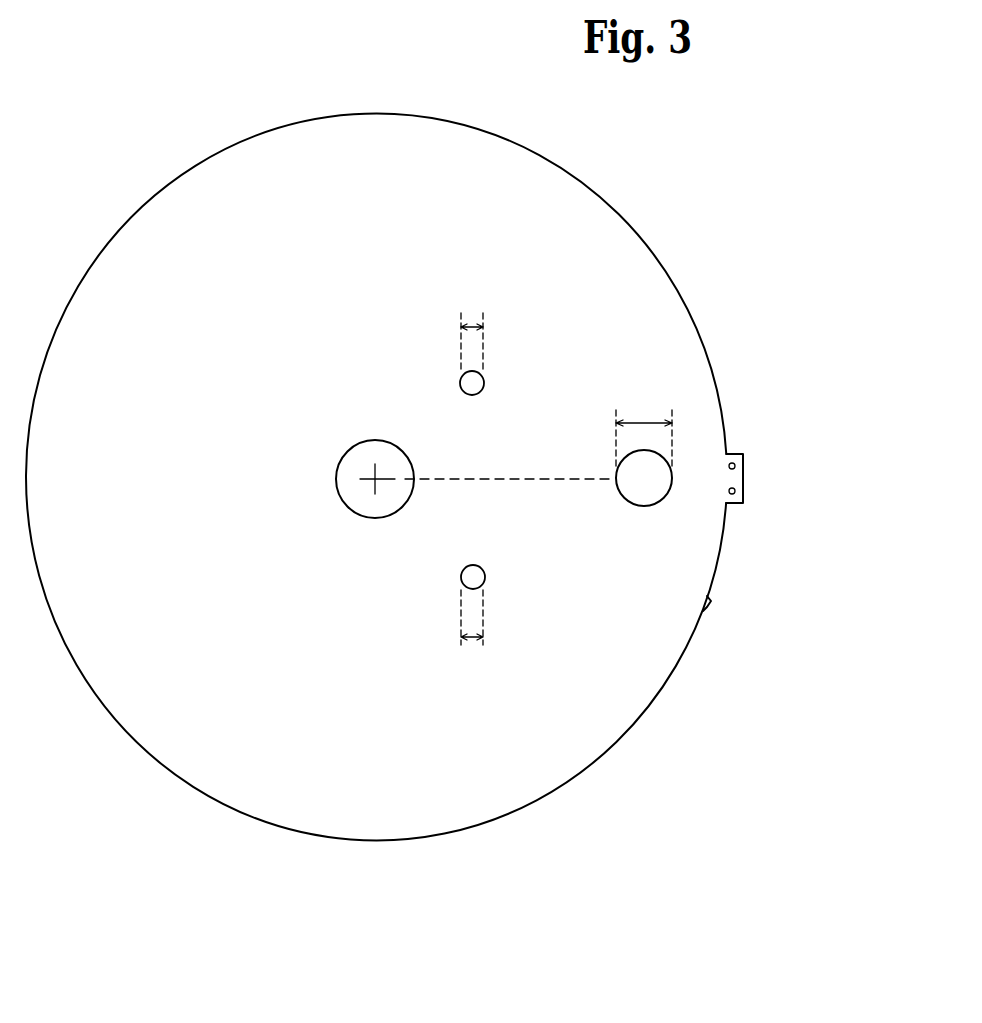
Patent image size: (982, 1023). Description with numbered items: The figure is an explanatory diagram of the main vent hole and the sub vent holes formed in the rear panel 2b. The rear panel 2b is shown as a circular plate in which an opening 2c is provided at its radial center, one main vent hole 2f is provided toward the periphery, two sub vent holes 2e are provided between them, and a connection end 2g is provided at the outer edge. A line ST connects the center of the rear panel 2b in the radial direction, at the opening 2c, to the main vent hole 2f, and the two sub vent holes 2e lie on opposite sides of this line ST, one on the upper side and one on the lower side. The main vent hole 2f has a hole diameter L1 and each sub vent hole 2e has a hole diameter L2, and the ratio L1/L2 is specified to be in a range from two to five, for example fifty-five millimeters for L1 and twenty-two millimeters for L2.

The rear panel 2b is at (572, 203).
The opening 2c is at (336, 482).
The sub vent holes 2e is at (473, 372).
The main vent hole 2f is at (630, 501).
The connection end 2g is at (743, 480).
The hole diameter of the main vent hole L1 is at (644, 431).
The hole diameter of the sub vent holes L2 is at (471, 477).
The line ST is at (509, 465).